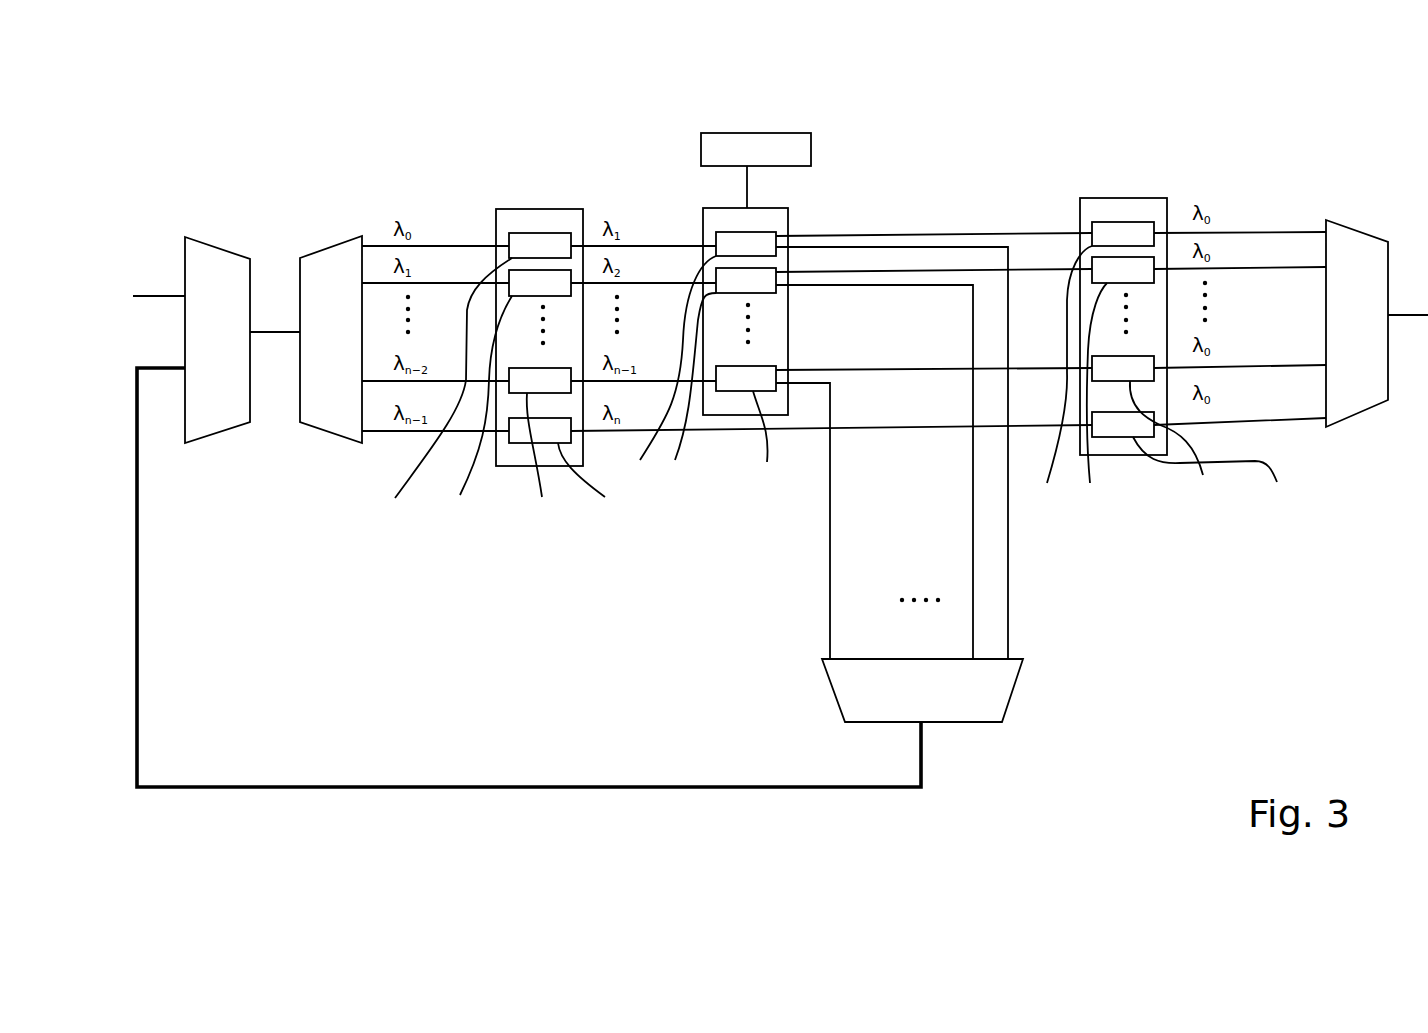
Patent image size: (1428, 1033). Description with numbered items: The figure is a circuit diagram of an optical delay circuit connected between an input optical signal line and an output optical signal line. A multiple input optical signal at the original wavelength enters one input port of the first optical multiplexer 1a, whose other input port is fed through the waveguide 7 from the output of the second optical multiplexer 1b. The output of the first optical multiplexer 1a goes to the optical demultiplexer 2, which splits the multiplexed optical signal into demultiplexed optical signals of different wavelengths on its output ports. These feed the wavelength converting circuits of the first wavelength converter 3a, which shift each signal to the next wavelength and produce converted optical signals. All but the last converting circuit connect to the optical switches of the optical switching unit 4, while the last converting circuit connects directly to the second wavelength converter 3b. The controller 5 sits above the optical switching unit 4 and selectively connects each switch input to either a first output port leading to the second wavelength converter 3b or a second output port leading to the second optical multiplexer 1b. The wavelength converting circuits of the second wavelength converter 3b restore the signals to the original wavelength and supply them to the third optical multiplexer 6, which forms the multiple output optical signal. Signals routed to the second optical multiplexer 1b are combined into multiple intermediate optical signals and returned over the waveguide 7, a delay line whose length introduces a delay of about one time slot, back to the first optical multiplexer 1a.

The first optical multiplexer 1a is at (217, 240).
The second optical multiplexer 1b is at (972, 722).
The optical demultiplexer 2 is at (330, 258).
The first wavelength converter 3a is at (518, 209).
The second wavelength converter 3b is at (1098, 198).
The optical switching unit 4 is at (771, 208).
The controller 5 is at (790, 133).
The third optical multiplexer 6 is at (1345, 222).
The waveguide 7 is at (602, 789).